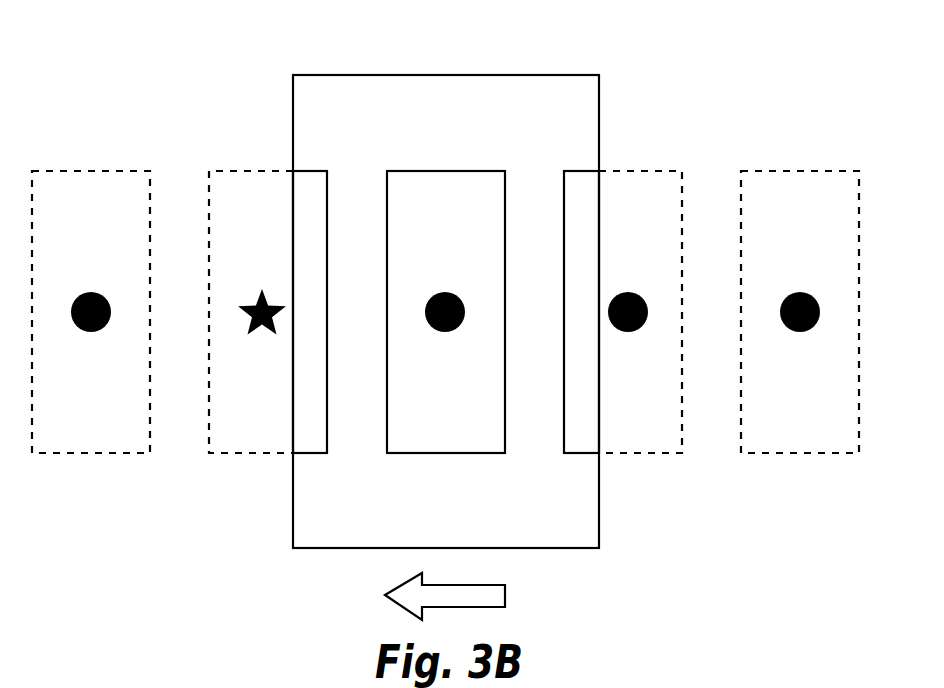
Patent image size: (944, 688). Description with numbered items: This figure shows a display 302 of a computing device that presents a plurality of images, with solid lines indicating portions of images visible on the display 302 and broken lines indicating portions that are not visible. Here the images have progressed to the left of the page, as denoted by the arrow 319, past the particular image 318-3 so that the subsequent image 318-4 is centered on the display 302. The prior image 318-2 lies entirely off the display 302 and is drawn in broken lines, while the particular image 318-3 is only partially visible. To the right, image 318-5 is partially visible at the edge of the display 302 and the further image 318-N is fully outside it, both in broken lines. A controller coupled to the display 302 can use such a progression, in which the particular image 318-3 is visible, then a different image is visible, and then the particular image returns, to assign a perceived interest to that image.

The display 302 is at (362, 82).
The prior image 318-2 is at (80, 177).
The particular image 318-3 is at (257, 177).
The subsequent image 318-4 is at (457, 177).
The image 318-5 is at (635, 177).
The image 318-N is at (812, 177).
The arrow 319 is at (500, 597).